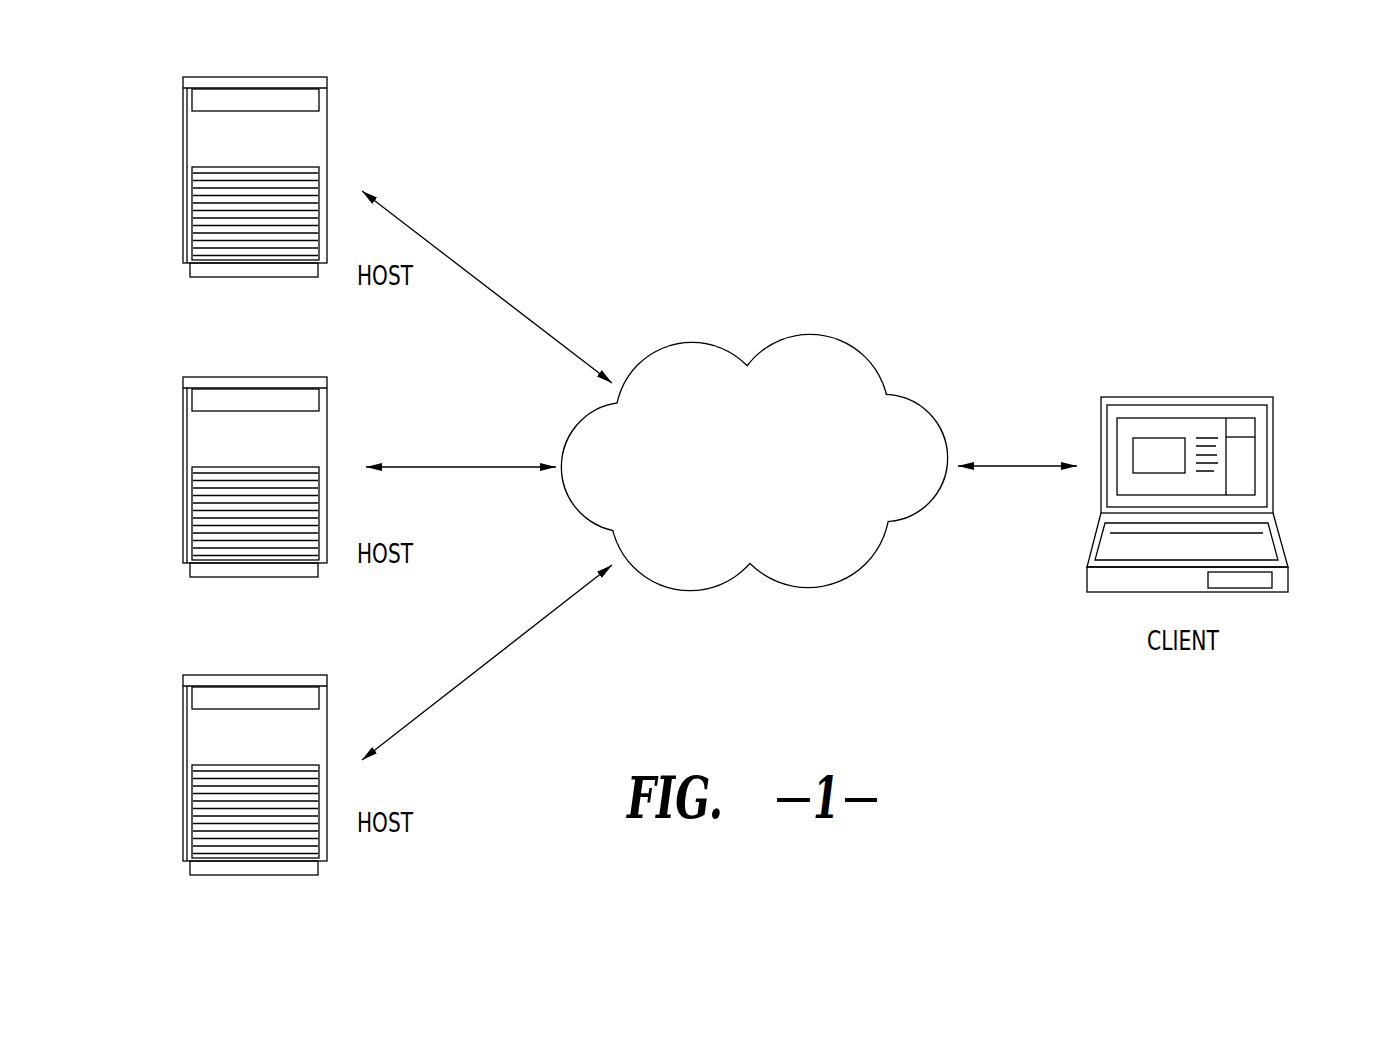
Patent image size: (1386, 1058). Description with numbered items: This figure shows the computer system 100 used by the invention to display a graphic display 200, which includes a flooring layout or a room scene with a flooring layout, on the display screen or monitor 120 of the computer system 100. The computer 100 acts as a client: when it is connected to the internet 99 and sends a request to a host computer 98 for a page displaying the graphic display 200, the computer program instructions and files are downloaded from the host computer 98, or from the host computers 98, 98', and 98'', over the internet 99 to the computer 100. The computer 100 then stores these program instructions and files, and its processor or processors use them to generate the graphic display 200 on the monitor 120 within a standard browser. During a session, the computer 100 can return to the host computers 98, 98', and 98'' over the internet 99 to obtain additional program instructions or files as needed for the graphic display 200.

The host computer 98 is at (280, 172).
The host computer 98' is at (283, 472).
The host computer 98'' is at (286, 770).
The internet 99 is at (768, 510).
The computer system 100 is at (1252, 513).
The monitor 120 is at (1207, 417).
The graphic display 200 is at (1152, 436).